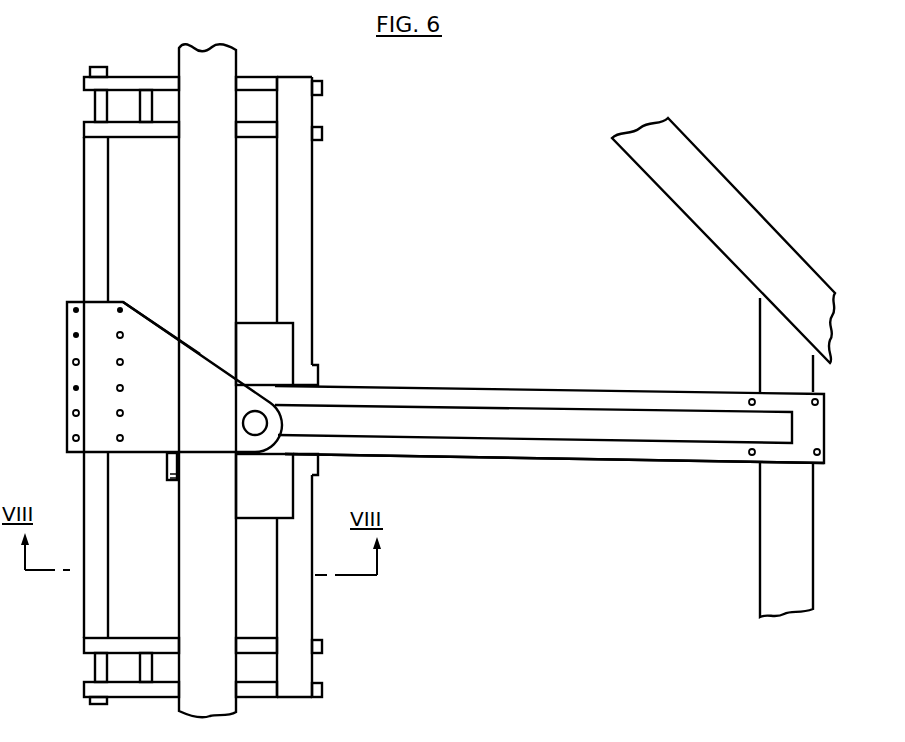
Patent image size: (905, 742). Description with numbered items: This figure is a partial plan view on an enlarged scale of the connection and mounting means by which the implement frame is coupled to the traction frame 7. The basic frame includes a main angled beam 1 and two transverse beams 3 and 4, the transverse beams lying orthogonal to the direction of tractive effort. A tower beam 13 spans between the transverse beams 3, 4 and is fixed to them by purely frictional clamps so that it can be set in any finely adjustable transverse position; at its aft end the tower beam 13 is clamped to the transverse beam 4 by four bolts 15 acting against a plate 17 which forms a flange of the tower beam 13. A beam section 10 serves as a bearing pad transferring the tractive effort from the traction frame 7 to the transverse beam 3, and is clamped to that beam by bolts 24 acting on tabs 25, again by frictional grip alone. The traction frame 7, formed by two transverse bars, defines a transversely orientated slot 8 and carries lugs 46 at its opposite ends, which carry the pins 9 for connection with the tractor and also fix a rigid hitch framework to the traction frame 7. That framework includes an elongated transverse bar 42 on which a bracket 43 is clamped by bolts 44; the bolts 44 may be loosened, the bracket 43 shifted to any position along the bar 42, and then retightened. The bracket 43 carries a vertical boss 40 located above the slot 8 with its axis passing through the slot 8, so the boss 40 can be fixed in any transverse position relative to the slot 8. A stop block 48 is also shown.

The main angled beam 1 is at (682, 198).
The transverse beam 3 is at (193, 216).
The transverse beam 4 is at (772, 547).
The traction frame 7 is at (297, 208).
The transversely orientated slot 8 is at (267, 173).
The pins 9 is at (92, 105).
The beam section 10 is at (277, 492).
The tower beam 13 is at (427, 422).
The bolts 15 is at (752, 398).
The plate 17 is at (565, 447).
The bolts 24 is at (172, 483).
The tabs 25 is at (167, 463).
The boss 40 is at (263, 418).
The elongated transverse bar 42 is at (95, 200).
The bracket 43 is at (135, 313).
The bolts 44 is at (75, 335).
The lugs 46 is at (85, 80).
The stop block 48 is at (308, 380).